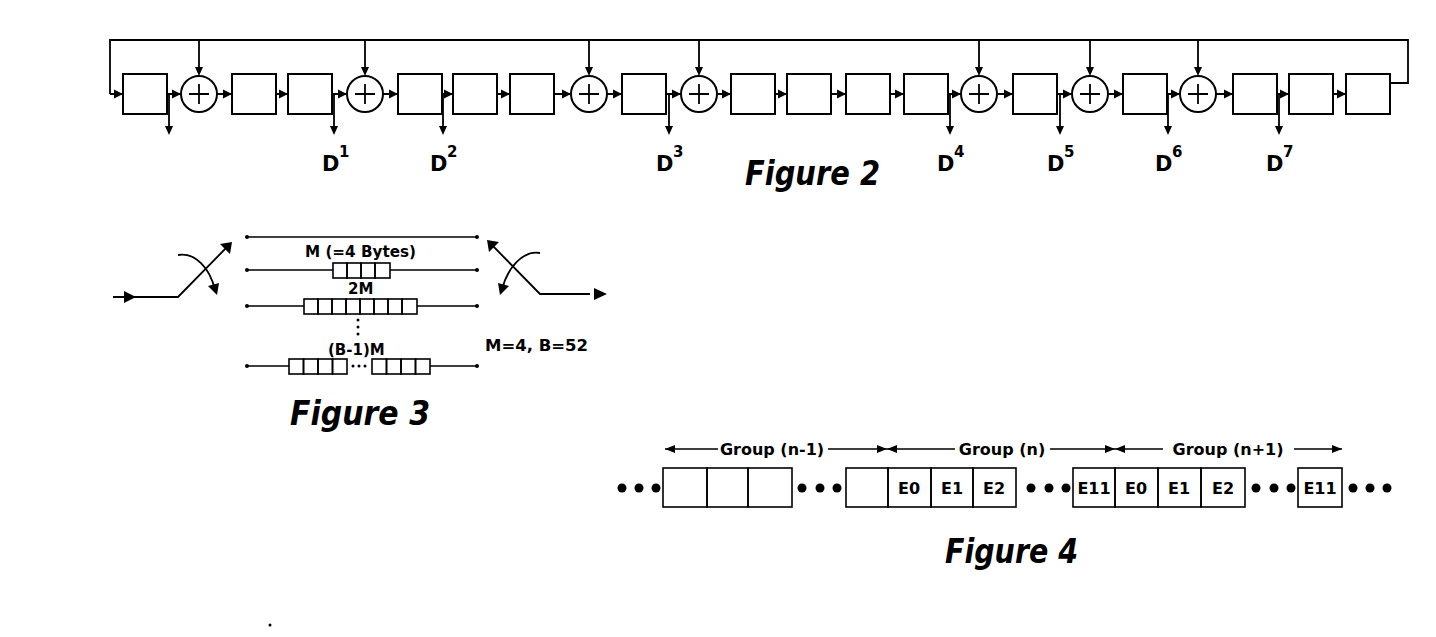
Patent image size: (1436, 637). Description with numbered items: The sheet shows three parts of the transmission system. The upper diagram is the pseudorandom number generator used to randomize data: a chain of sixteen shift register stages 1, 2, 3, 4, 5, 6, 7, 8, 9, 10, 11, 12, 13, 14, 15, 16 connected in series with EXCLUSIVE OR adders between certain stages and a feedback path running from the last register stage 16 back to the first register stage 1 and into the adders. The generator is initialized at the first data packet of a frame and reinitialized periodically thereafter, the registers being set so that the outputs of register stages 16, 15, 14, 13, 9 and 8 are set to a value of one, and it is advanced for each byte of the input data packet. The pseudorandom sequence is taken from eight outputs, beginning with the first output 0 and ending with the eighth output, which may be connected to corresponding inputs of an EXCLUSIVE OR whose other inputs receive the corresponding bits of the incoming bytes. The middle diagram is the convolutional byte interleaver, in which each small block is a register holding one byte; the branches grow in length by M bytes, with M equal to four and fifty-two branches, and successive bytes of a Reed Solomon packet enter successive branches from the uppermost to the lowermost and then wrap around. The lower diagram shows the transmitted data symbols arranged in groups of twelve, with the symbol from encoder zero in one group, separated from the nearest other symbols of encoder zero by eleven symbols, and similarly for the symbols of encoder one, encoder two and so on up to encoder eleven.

In FIG. 2, the output D0 0 is at (169, 135).
In FIG. 4, the output D0 0 is at (685, 487).
In FIG. 2, the register X1 1 is at (145, 94).
In FIG. 4, the register X1 1 is at (727, 487).
In FIG. 2, the register X2 2 is at (254, 94).
In FIG. 4, the register X2 2 is at (770, 487).
In FIG. 2, the register X3 3 is at (310, 94).
In FIG. 2, the register X4 4 is at (420, 94).
In FIG. 2, the register X5 5 is at (475, 94).
In FIG. 2, the register X6 6 is at (532, 94).
In FIG. 2, the register X7 7 is at (644, 94).
In FIG. 2, the register X8 8 is at (753, 94).
In FIG. 2, the register X9 9 is at (809, 94).
In FIG. 2, the register X10 10 is at (868, 94).
In FIG. 2, the register X11 11 is at (926, 94).
In FIG. 4, the register X11 11 is at (867, 487).
In FIG. 2, the register X12 12 is at (1035, 94).
In FIG. 2, the register X13 13 is at (1145, 94).
In FIG. 2, the register X14 14 is at (1255, 94).
In FIG. 2, the register X15 15 is at (1311, 94).
In FIG. 2, the register X16 16 is at (1368, 94).